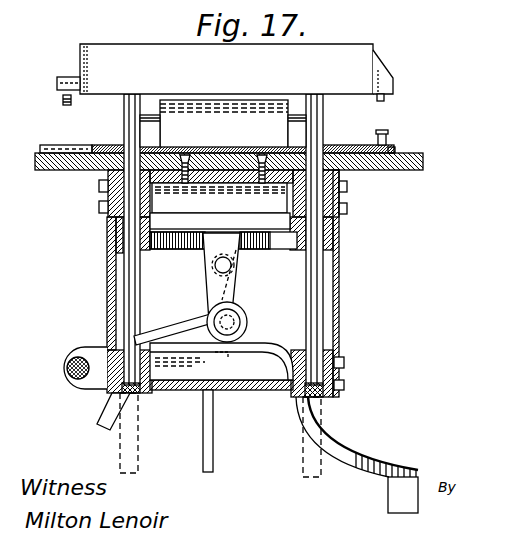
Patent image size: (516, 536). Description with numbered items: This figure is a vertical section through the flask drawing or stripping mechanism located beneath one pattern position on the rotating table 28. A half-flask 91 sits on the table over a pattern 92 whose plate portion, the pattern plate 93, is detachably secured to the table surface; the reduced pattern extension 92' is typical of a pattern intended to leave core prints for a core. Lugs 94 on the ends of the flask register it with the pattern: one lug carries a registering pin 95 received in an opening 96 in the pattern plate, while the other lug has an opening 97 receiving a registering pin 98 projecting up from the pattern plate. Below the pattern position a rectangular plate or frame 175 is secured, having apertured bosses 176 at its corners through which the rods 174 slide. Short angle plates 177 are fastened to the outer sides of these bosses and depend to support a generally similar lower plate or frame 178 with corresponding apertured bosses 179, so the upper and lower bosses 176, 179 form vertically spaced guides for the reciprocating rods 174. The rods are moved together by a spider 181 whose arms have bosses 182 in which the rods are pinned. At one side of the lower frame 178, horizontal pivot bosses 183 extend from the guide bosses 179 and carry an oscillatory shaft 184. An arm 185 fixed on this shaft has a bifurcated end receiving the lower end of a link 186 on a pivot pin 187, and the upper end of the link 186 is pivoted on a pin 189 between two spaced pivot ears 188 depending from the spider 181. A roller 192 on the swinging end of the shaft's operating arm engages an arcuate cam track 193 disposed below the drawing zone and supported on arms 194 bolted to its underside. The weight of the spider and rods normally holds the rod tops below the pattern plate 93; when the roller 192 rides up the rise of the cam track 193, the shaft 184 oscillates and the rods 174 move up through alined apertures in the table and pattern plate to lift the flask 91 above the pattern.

The rotating table 28 is at (424, 160).
The flask 91 is at (374, 52).
The pattern 92 is at (220, 137).
The reduced pattern extension 92' is at (229, 122).
The pattern plate 93 is at (396, 149).
The lug 94 is at (78, 59).
The registering pin 95 is at (63, 100).
The opening 96 is at (76, 146).
The opening 97 is at (380, 98).
The registering pin 98 is at (386, 140).
The rod 174 is at (103, 194).
The upper plate or frame 175 is at (300, 197).
The apertured boss 176 is at (103, 213).
The angle plate 177 is at (108, 234).
The lower plate or frame 178 is at (262, 393).
The apertured boss 179 is at (338, 352).
The spider 181 is at (280, 242).
The boss 182 is at (108, 258).
The pivot boss 183 is at (112, 391).
The oscillatory shaft 184 is at (70, 366).
The arm 185 is at (196, 310).
The link 186 is at (233, 296).
The pivot pin 187 is at (243, 315).
The pivot ear 188 is at (233, 254).
The pivot pin 189 is at (214, 264).
The roller 192 is at (262, 326).
The cam track 193 is at (344, 428).
The arm 194 is at (213, 468).